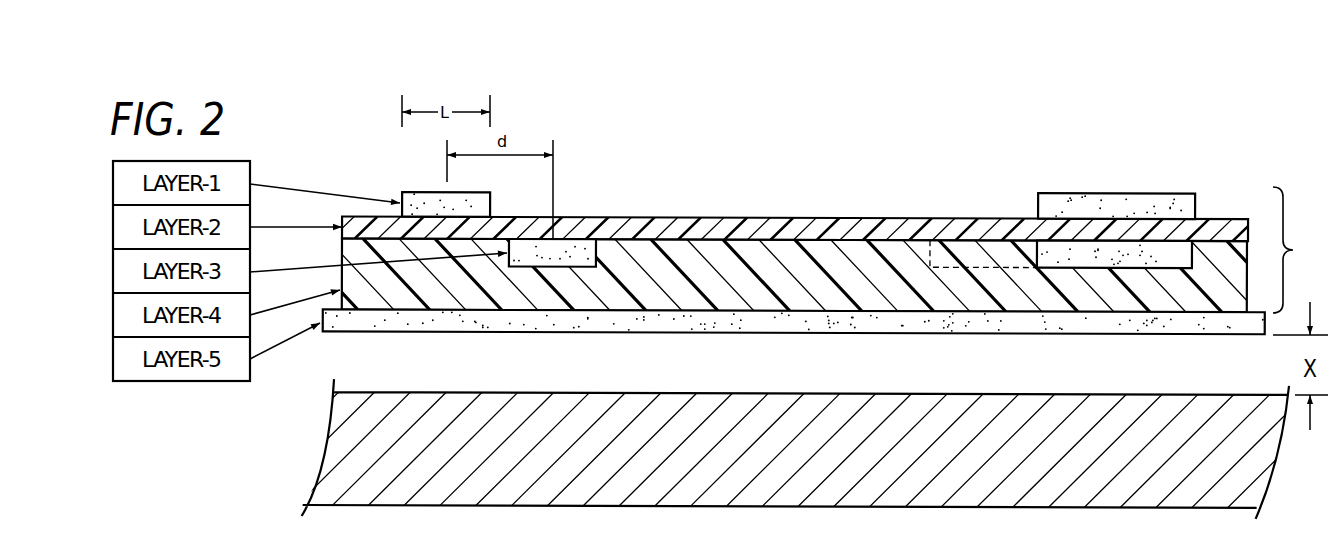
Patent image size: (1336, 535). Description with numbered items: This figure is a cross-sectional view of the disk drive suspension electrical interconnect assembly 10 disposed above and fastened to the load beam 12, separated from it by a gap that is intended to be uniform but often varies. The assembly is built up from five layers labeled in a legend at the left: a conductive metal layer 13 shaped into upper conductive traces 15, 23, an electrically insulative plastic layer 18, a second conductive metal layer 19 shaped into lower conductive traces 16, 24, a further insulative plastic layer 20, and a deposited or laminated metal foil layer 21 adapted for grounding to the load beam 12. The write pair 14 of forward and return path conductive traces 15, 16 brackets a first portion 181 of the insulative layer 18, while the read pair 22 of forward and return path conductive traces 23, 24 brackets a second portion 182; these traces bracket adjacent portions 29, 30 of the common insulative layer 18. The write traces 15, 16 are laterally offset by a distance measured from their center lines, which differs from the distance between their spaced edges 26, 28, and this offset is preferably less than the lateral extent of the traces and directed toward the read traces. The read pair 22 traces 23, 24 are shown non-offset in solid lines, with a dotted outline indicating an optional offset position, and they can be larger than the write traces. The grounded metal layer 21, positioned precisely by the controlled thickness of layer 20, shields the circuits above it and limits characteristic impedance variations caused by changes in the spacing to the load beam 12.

The interconnect assembly 10 is at (1300, 250).
The load beam 12 is at (345, 430).
The conductive metal layer 13 is at (1200, 208).
The write pair 14 is at (563, 187).
The forward path conductive trace 15 is at (422, 191).
The return path conductive trace 16 is at (582, 254).
The insulative plastic layer 18 is at (745, 217).
The first portion of the insulative layer 181 is at (523, 227).
The second portion of the insulative layer 182 is at (1057, 230).
The second conductive metal layer 19 is at (480, 269).
The further insulative plastic layer 20 is at (652, 288).
The metal foil layer 21 is at (520, 333).
The read pair 22 is at (1232, 200).
The forward path conductive trace 23 is at (1105, 193).
The return path conductive trace 24 is at (1170, 268).
The edge of trace 26 is at (473, 205).
The edge of trace 28 is at (508, 261).
The portion of the insulative layer 29 is at (408, 227).
The portion of the insulative layer 30 is at (1147, 230).